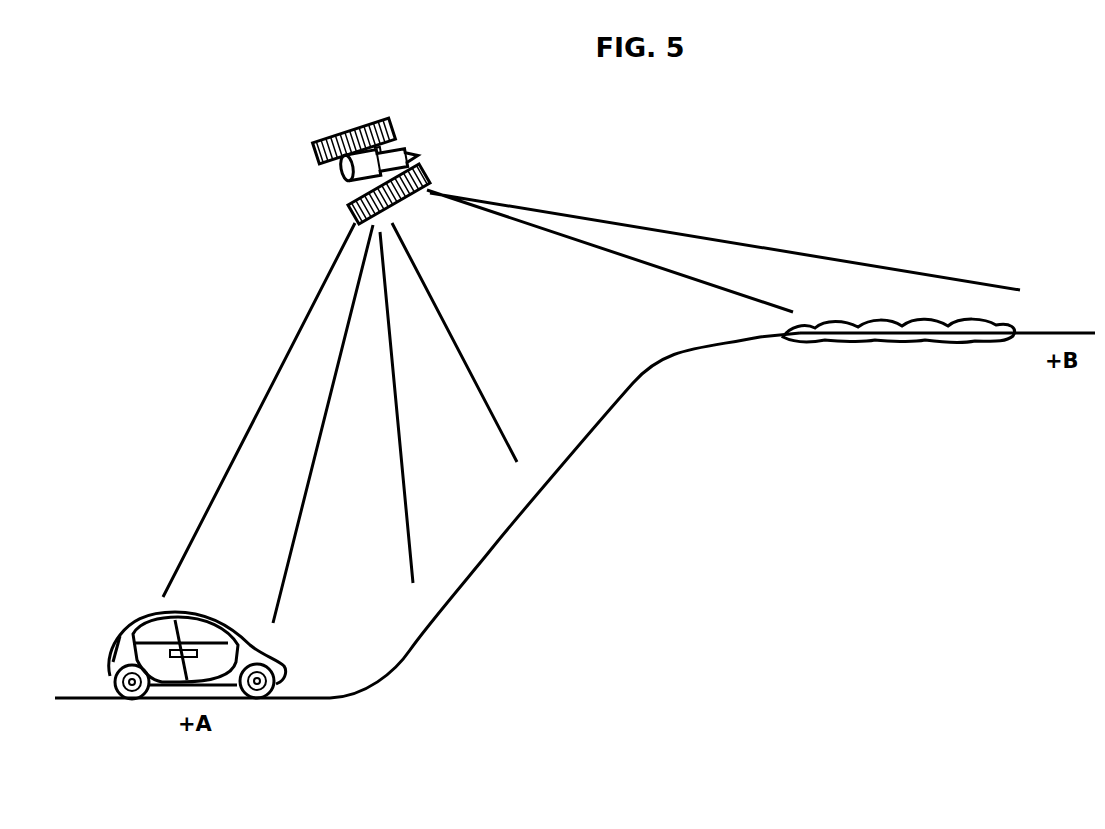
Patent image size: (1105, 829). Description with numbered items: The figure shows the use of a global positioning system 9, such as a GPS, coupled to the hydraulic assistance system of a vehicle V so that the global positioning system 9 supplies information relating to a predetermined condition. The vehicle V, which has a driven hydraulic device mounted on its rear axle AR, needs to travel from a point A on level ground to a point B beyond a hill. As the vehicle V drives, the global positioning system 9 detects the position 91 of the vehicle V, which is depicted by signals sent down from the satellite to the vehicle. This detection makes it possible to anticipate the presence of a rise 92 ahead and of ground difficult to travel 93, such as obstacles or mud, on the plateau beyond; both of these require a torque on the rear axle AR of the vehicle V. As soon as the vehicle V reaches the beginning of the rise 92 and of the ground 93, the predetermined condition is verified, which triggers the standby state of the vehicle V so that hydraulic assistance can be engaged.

The global positioning system 9 is at (414, 137).
The position 91 is at (208, 507).
The rise 92 is at (493, 548).
The ground difficult to travel 93 is at (893, 341).
The vehicle V is at (132, 610).
The rear axle AR is at (132, 703).